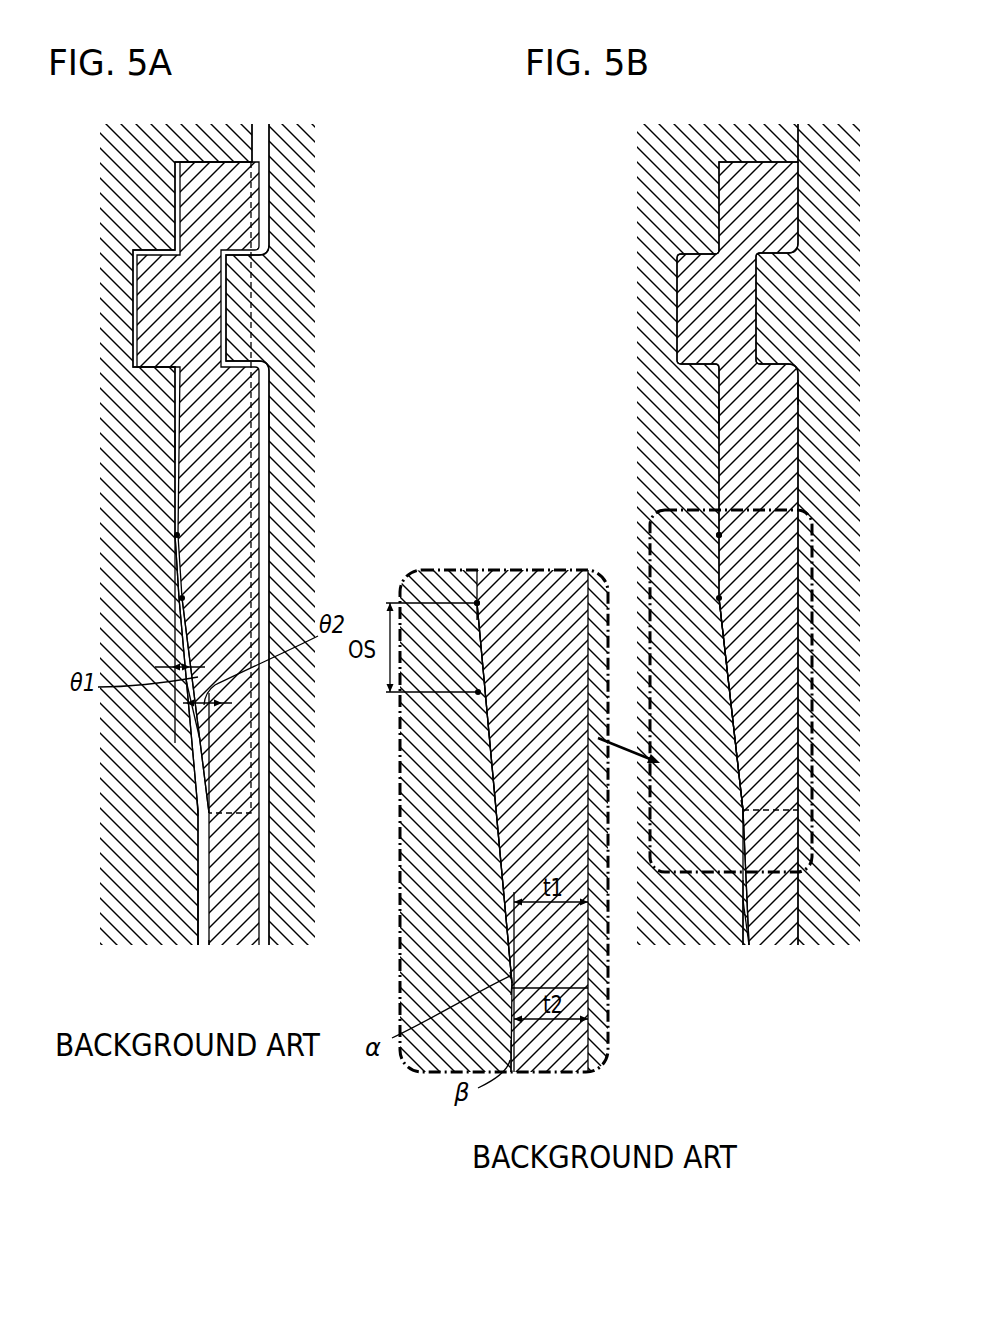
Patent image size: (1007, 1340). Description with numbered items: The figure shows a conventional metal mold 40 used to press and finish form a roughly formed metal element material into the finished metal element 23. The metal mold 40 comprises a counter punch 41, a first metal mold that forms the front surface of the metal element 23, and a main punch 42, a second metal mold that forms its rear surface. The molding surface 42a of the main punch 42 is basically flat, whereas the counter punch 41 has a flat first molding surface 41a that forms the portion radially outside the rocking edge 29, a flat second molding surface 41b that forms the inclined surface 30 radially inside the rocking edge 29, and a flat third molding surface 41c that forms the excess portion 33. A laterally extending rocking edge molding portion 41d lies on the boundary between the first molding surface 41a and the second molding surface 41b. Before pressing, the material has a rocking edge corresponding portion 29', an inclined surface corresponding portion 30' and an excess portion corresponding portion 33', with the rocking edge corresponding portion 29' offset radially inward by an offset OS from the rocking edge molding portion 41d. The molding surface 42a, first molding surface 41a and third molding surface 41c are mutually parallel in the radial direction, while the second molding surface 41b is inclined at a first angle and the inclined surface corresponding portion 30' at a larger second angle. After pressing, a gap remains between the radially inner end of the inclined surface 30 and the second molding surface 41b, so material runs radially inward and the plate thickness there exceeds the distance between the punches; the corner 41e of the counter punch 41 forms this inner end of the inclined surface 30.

In FIG. 5A, the metal mold 40 is at (242, 63).
In FIG. 5B, the metal mold 40 is at (770, 63).
In FIG. 5A, the counter punch 41 is at (226, 118).
In FIG. 5B, the counter punch 41 is at (758, 118).
In FIG. 5A, the main punch 42 is at (292, 118).
In FIG. 5B, the main punch 42 is at (821, 118).
In FIG. 5A, the metal element 23 is at (240, 400).
In FIG. 5B, the metal element 23 is at (730, 207).
In FIG. 5A, the first molding surface 41a is at (176, 436).
In FIG. 5B, the first molding surface 41a is at (716, 404).
In FIG. 5A, the second molding surface 41b is at (188, 703).
In FIG. 5B, the second molding surface 41b is at (727, 640).
In FIG. 5A, the third molding surface 41c is at (202, 892).
In FIG. 5B, the third molding surface 41c is at (745, 900).
In FIG. 5A, the rocking edge molding portion 41d is at (177, 535).
In FIG. 5B, the rocking edge molding portion 41d is at (718, 536).
In FIG. 5A, the corner 41e is at (199, 814).
In FIG. 5B, the corner 41e is at (745, 810).
In FIG. 5A, the molding surface 42a is at (270, 408).
In FIG. 5B, the molding surface 42a is at (798, 393).
In FIG. 5B, the rocking edge 29 is at (598, 569).
In FIG. 5A, the rocking edge corresponding portion 29' is at (127, 628).
In FIG. 5B, the rocking edge corresponding portion 29' is at (544, 637).
In FIG. 5B, the inclined surface 30 is at (554, 748).
In FIG. 5A, the inclined surface corresponding portion 30' is at (131, 731).
In FIG. 5B, the excess portion 33 is at (639, 1002).
In FIG. 5A, the excess portion corresponding portion 33' is at (200, 972).